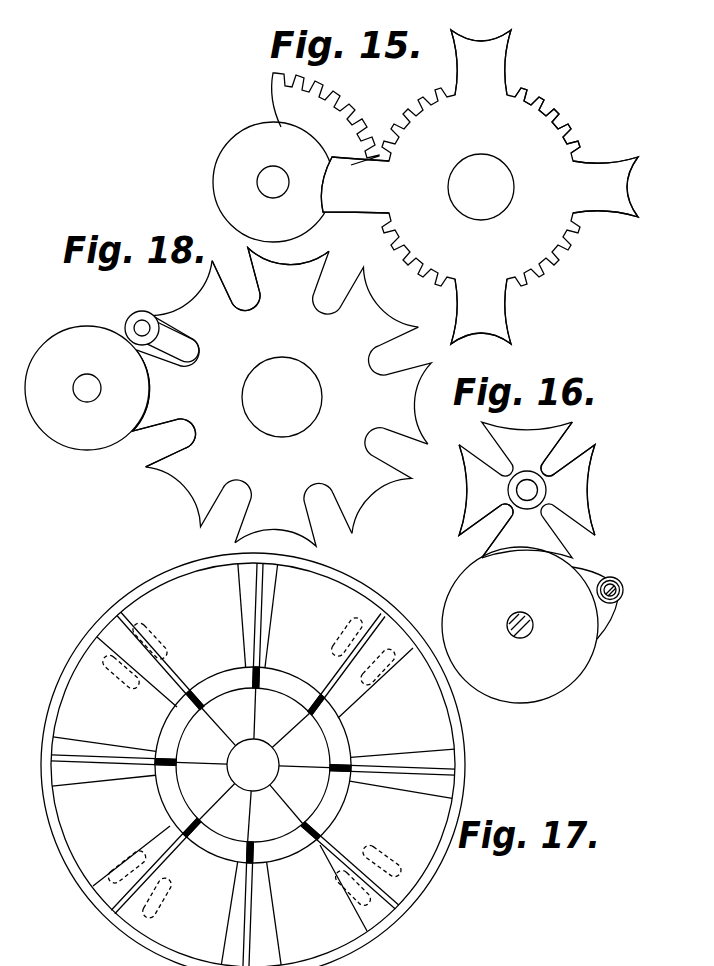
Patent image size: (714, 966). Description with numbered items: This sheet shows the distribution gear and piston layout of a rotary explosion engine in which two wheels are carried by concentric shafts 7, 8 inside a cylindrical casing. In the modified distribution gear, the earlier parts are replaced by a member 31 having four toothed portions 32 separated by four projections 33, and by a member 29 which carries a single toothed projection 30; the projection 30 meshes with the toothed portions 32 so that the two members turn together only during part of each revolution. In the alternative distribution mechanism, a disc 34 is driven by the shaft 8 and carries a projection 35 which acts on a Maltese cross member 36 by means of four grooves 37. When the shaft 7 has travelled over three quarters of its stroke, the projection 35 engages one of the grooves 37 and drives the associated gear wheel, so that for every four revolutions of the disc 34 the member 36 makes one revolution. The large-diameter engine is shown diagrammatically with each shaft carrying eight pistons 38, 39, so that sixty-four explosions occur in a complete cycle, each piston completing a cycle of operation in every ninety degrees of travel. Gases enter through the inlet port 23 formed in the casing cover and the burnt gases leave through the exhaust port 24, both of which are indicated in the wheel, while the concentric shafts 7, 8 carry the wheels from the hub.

In FIG. 17, the shaft 7 is at (322, 738).
In FIG. 17, the shaft 8 is at (279, 757).
In FIG. 17, the inlet port 23 is at (170, 645).
In FIG. 17, the exhaust port 24 is at (113, 673).
In FIG. 15, the member 29 is at (250, 150).
In FIG. 15, the toothed projection 30 is at (288, 102).
In FIG. 15, the member 31 is at (513, 217).
In FIG. 15, the toothed portions 32 is at (392, 120).
In FIG. 15, the projections 33 is at (490, 53).
In FIG. 18, the disc 34 is at (80, 347).
In FIG. 16, the disc 34 is at (478, 590).
In FIG. 18, the projection 35 is at (120, 323).
In FIG. 16, the projection 35 is at (582, 585).
In FIG. 18, the Maltese cross member 36 is at (230, 435).
In FIG. 16, the Maltese cross member 36 is at (466, 496).
In FIG. 18, the grooves 37 is at (160, 442).
In FIG. 16, the grooves 37 is at (570, 442).
In FIG. 17, the pistons 38 is at (113, 633).
In FIG. 17, the pistons 39 is at (135, 613).